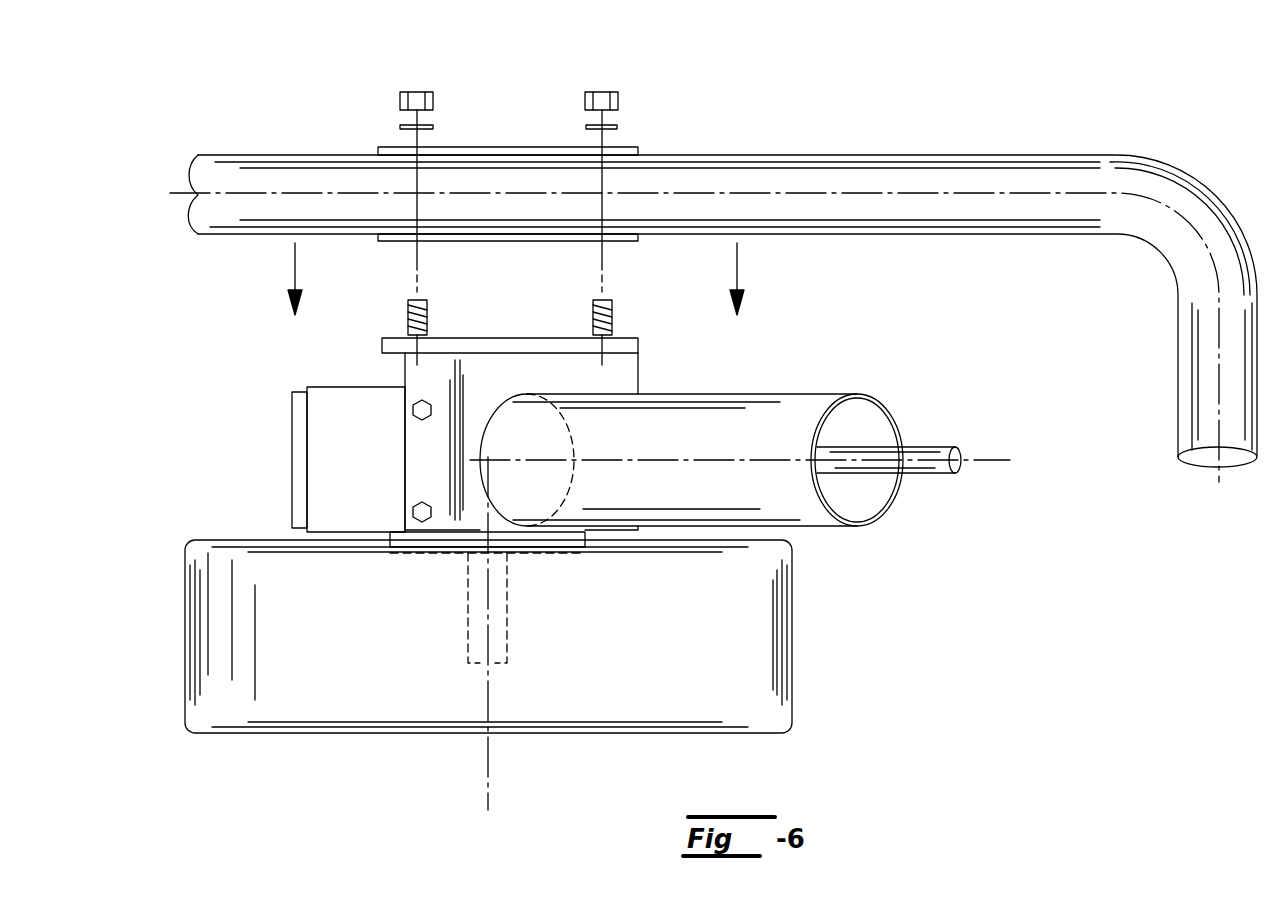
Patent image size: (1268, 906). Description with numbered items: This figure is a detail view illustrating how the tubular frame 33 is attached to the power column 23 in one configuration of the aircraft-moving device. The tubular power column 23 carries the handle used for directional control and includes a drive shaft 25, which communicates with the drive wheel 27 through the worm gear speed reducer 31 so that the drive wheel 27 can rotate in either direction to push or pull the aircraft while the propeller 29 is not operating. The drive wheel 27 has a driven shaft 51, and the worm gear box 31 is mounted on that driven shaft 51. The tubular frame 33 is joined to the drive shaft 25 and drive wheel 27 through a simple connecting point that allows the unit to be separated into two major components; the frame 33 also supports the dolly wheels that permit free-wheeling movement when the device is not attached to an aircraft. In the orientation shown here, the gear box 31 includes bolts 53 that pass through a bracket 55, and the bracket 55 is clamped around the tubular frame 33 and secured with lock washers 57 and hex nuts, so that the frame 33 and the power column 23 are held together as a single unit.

The tubular power column 23 is at (827, 392).
The drive shaft 25 is at (945, 445).
The drive wheel 27 is at (275, 713).
The propeller 29 is at (603, 90).
The worm gear speed reducer 31 is at (328, 402).
The tubular frame 33 is at (835, 152).
The driven shaft 51 is at (478, 647).
The bolts 53 is at (613, 315).
The bracket 55 is at (630, 147).
The lock washers 57 is at (585, 127).